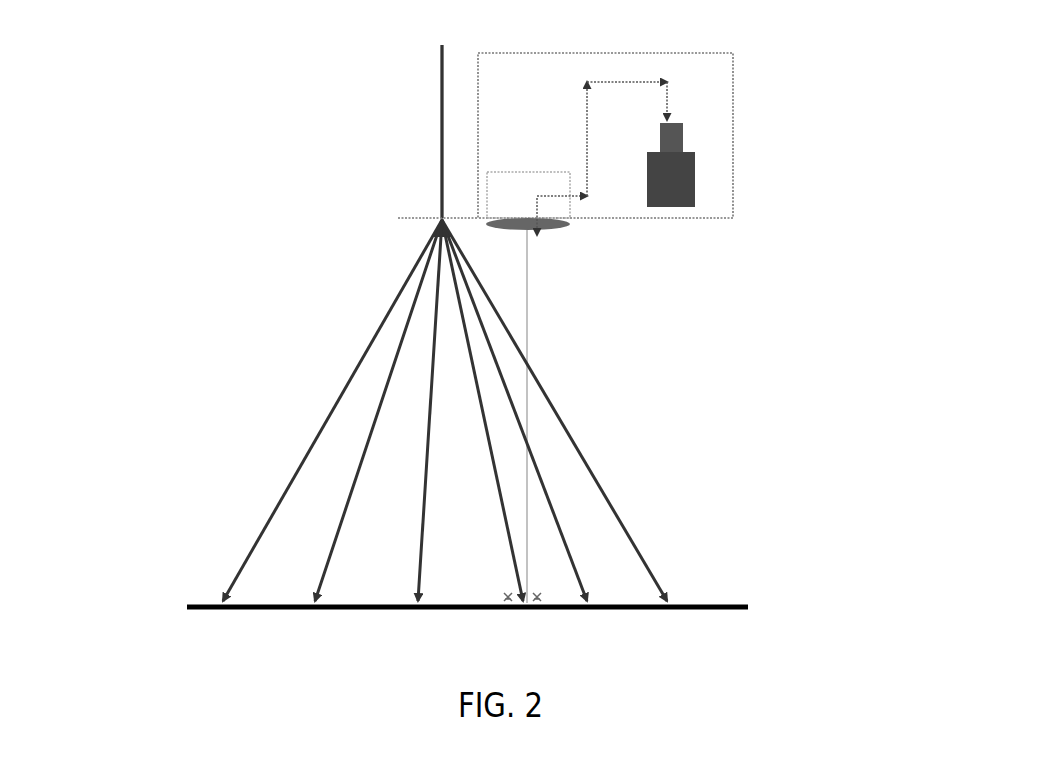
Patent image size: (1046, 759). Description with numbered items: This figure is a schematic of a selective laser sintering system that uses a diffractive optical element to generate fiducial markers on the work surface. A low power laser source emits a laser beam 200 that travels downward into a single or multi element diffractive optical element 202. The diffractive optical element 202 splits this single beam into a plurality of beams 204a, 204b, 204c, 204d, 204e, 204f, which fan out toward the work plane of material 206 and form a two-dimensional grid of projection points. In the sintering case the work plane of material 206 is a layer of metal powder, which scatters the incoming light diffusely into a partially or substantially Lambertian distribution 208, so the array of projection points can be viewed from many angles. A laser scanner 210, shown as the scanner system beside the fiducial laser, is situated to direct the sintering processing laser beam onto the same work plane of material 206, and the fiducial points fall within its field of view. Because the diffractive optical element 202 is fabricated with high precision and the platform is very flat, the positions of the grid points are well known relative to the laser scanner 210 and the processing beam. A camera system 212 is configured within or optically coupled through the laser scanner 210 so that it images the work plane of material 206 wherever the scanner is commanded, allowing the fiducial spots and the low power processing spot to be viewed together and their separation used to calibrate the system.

The laser beam 200 is at (440, 161).
The diffractive optical element 202 is at (423, 217).
The beam 204a is at (400, 293).
The beam 204b is at (390, 387).
The beam 204c is at (425, 463).
The beam 204d is at (463, 328).
The beam 204e is at (510, 395).
The beam 204f is at (588, 460).
The work plane of material 206 is at (272, 603).
The Lambertian distribution 208 is at (530, 587).
The laser scanner 210 is at (707, 52).
The camera system 212 is at (693, 180).